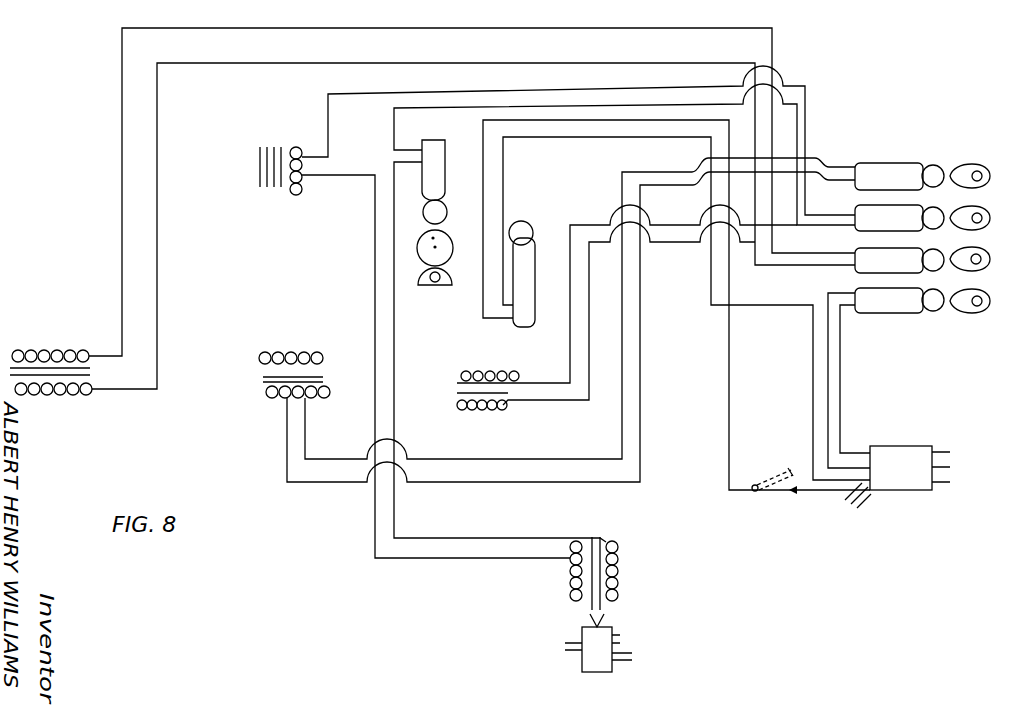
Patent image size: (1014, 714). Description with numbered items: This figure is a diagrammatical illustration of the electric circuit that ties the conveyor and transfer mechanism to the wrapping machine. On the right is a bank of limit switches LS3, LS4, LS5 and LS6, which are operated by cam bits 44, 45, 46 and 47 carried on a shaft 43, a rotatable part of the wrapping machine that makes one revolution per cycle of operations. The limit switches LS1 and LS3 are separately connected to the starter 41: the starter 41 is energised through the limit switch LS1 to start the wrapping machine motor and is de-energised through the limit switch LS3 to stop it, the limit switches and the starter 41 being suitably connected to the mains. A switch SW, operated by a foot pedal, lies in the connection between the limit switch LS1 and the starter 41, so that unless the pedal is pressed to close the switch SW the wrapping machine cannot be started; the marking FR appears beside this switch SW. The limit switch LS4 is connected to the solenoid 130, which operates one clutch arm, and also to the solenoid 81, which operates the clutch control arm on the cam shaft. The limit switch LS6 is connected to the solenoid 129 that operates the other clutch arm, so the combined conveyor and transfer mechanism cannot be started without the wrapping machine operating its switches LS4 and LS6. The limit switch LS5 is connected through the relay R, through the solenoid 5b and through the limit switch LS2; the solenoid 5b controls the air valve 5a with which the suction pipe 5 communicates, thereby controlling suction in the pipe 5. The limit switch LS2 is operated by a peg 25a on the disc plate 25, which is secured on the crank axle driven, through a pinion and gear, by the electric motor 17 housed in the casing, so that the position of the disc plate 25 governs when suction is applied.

The solenoid 81 is at (64, 350).
The solenoid 129 is at (293, 352).
The solenoid 130 is at (493, 360).
The electric motor 17 is at (432, 284).
The disc plate 25 is at (437, 255).
The peg 25a is at (441, 236).
The starter 41 is at (907, 457).
The shaft 43 is at (979, 172).
The cam bit 44 is at (967, 306).
The cam bit 45 is at (980, 256).
The cam bit 46 is at (977, 214).
The cam bit 47 is at (967, 166).
The pipe 5 is at (630, 655).
The air valve 5a is at (598, 632).
The solenoid 5b is at (616, 543).
The relay R is at (263, 146).
The limit switch LS1 is at (537, 274).
The second limit switch LS2 is at (448, 182).
The limit switch LS3 is at (899, 300).
The limit switch LS4 is at (899, 260).
The limit switch LS5 is at (899, 218).
The limit switch LS6 is at (899, 176).
The friction release FR is at (789, 471).
The switch SW is at (772, 493).